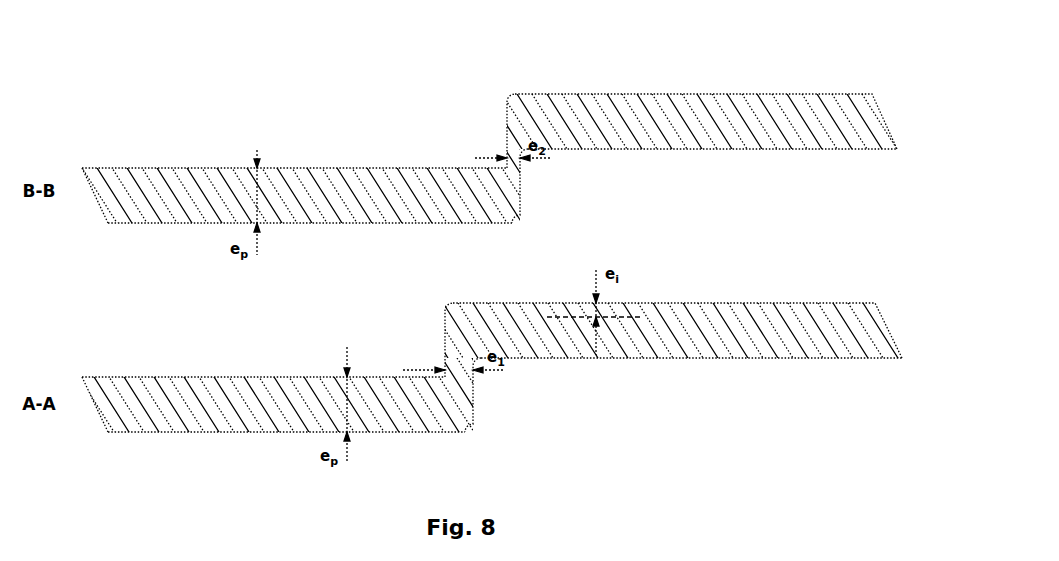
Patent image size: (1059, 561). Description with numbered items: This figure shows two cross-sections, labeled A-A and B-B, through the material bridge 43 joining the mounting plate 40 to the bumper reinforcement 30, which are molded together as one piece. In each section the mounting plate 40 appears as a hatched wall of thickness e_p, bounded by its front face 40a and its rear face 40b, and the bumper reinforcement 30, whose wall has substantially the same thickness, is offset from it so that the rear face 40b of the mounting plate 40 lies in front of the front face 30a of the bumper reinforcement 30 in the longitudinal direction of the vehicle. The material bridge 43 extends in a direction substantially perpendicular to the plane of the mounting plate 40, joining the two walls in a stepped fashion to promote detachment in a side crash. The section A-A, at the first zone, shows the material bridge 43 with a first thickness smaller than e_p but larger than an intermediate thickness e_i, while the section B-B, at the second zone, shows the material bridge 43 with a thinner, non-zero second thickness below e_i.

The bumper reinforcement 30 is at (642, 127).
The front face of the bumper reinforcement 30a is at (690, 150).
The mounting plate 40 is at (352, 168).
The front face of the mounting plate 40a is at (308, 223).
The rear face of the mounting plate 40b is at (177, 168).
The material bridge 43 is at (505, 135).